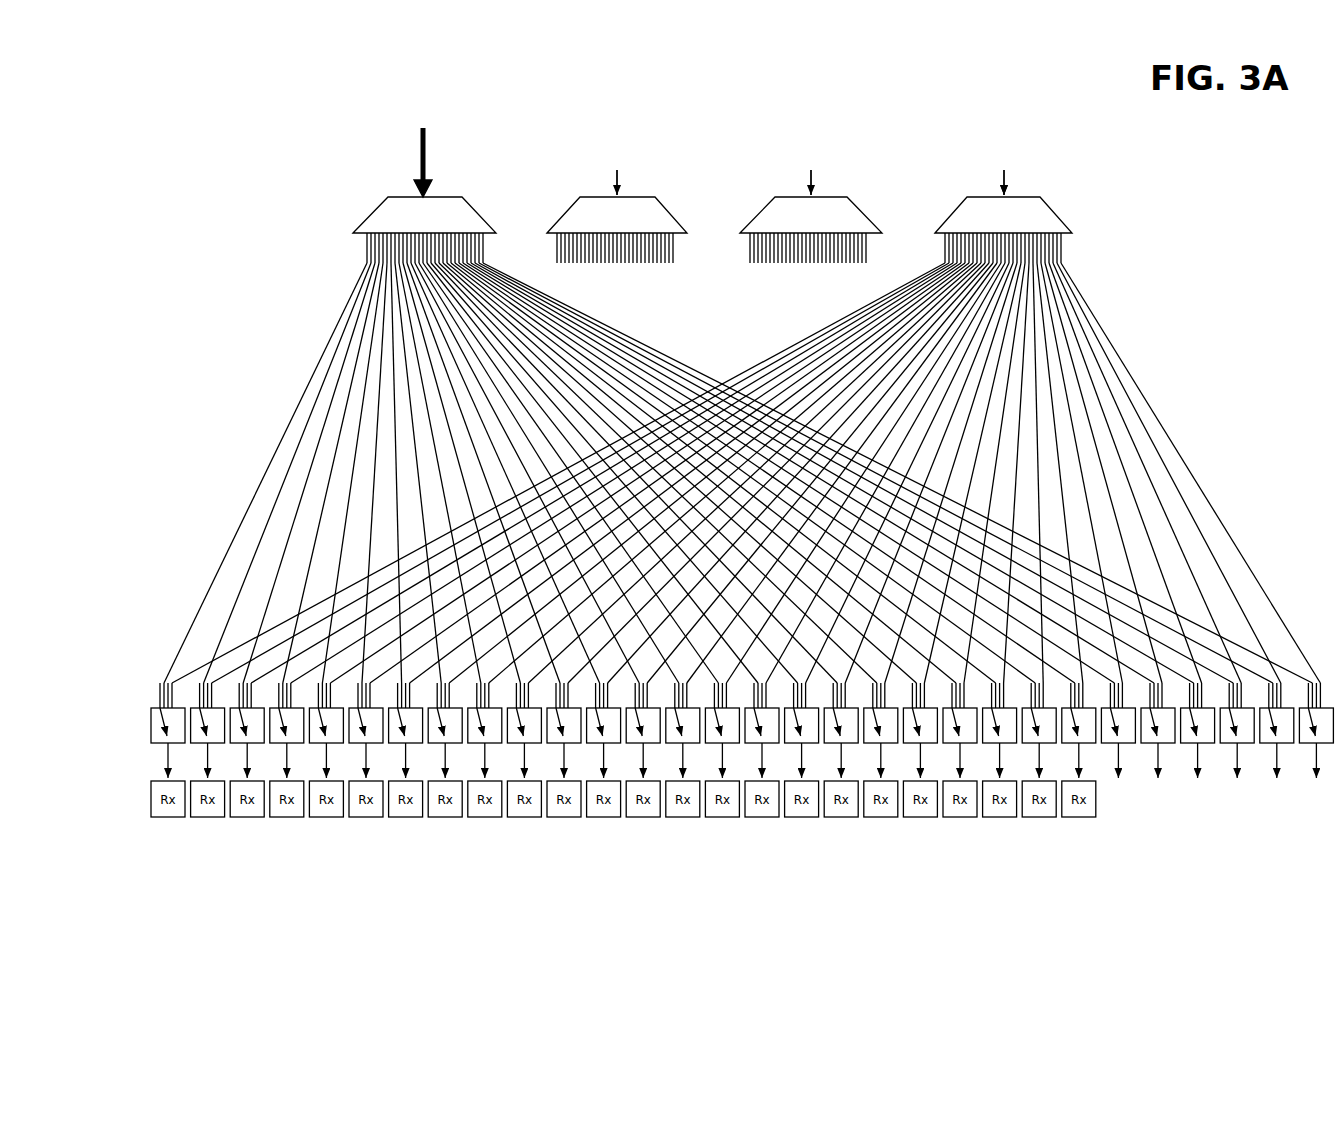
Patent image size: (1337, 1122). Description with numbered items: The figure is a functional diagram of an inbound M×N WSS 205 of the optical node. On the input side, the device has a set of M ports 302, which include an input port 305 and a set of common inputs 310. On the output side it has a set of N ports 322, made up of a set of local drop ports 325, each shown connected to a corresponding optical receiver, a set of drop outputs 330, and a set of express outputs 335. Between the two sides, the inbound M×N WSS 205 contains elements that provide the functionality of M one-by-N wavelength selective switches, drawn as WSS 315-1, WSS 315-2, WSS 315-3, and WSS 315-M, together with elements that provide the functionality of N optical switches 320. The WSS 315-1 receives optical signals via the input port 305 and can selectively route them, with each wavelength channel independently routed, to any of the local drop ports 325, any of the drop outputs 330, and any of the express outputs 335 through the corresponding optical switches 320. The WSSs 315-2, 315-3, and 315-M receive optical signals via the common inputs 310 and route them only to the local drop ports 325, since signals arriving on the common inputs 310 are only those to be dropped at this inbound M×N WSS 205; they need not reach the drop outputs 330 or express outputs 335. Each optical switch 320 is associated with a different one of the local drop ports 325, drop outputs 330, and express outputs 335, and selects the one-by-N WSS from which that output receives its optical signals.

The inbound M×N WSS 205 is at (293, 70).
The M ports 302 is at (402, 121).
The input port 305 is at (351, 162).
The common inputs 310 is at (1018, 165).
The 1×N WSS 315-1 is at (424, 230).
The 1×N WSS 315-2 is at (617, 230).
The 1×N WSS 315-3 is at (811, 230).
The 1×N WSS 315-M is at (1003, 230).
The optical switches 320 is at (1298, 708).
The N ports 322 is at (151, 870).
The local drop ports 325 is at (151, 824).
The drop outputs 330 is at (1208, 812).
The express outputs 335 is at (1330, 812).